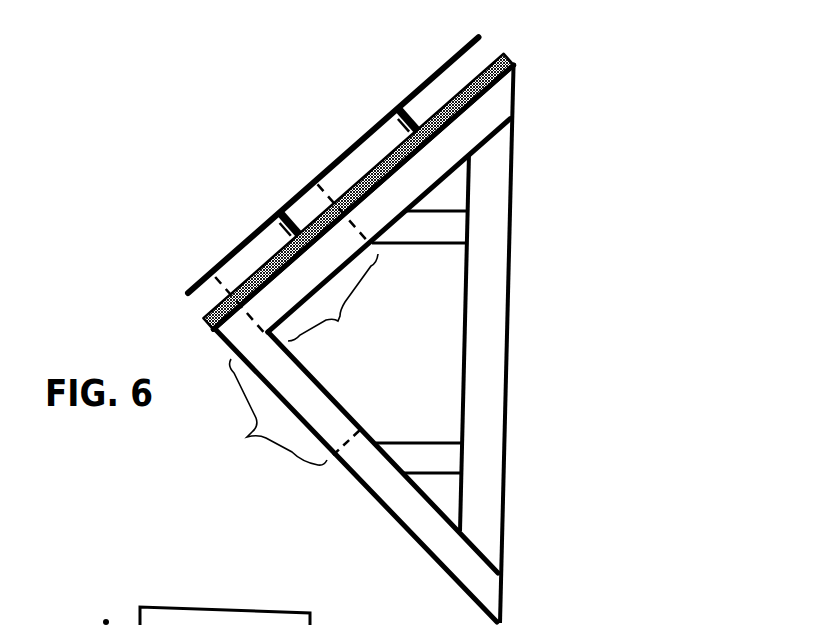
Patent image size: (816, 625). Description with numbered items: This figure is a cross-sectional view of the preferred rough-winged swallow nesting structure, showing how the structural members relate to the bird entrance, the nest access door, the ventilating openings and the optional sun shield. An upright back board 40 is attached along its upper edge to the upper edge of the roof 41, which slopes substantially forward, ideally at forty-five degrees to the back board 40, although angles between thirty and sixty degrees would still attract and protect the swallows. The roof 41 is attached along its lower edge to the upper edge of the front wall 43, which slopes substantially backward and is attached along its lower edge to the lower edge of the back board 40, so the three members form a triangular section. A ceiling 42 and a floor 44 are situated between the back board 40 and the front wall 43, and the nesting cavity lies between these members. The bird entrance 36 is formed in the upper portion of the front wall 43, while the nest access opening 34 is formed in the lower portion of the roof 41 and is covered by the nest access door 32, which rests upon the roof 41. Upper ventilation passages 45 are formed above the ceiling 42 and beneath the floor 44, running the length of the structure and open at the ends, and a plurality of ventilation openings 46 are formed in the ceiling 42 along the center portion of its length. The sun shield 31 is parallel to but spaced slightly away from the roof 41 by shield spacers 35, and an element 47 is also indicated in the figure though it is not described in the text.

The sun shield 31 is at (179, 209).
The nest access door 32 is at (240, 283).
The nest access opening 34 is at (333, 302).
The shield spacers 35 is at (278, 212).
The bird entrance 36 is at (278, 413).
The back board 40 is at (495, 303).
The roof 41 is at (483, 111).
The ceiling 42 is at (445, 227).
The front wall 43 is at (413, 508).
The floor 44 is at (443, 455).
The upper ventilation passages 45 is at (445, 190).
The ventilation openings 46 is at (418, 228).
The base member 47 is at (51, 624).